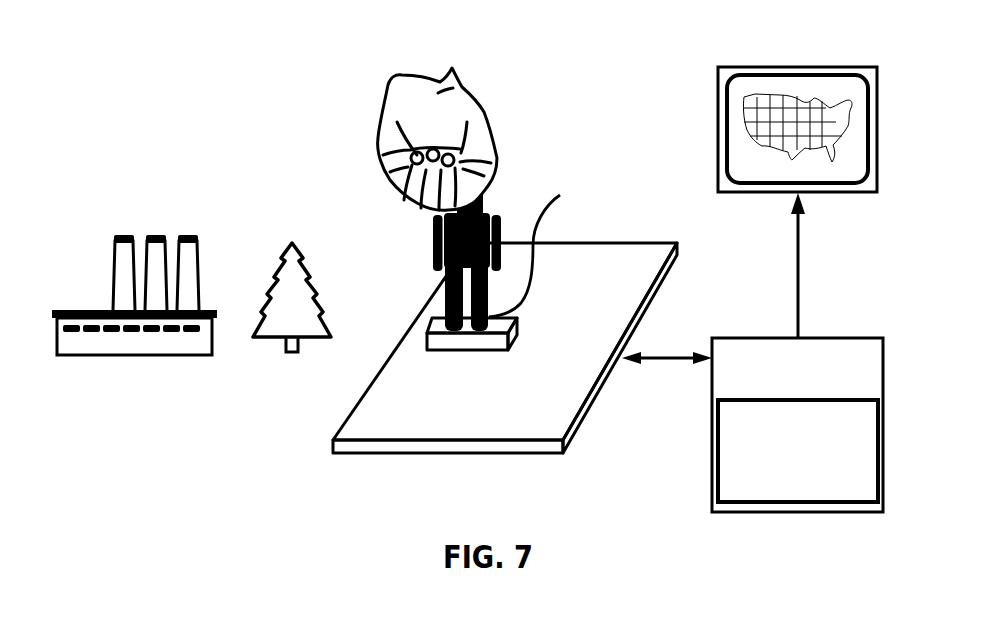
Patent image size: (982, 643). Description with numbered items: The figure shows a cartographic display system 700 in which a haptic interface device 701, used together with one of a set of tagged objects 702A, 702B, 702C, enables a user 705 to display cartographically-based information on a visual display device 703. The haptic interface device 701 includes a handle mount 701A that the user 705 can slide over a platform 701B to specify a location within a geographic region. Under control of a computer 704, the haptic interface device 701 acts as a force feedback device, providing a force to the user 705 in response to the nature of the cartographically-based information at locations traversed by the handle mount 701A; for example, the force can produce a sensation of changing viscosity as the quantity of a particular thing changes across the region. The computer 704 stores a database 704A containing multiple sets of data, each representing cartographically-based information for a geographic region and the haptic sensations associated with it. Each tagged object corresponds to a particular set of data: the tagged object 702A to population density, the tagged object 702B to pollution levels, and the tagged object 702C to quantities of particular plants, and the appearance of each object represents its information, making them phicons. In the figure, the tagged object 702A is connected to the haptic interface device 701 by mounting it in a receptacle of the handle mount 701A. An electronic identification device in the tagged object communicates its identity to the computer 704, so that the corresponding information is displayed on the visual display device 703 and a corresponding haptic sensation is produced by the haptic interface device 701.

The cartographic display system 700 is at (245, 85).
The haptic interface device 701 is at (636, 243).
The handle mount 701A is at (554, 249).
The platform 701B is at (546, 430).
The tagged object 702A is at (434, 233).
The tagged object 702B is at (293, 352).
The tagged object 702C is at (117, 354).
The visual display device 703 is at (718, 148).
The computer 704 is at (712, 447).
The database 704A is at (870, 419).
The user 705 is at (470, 93).